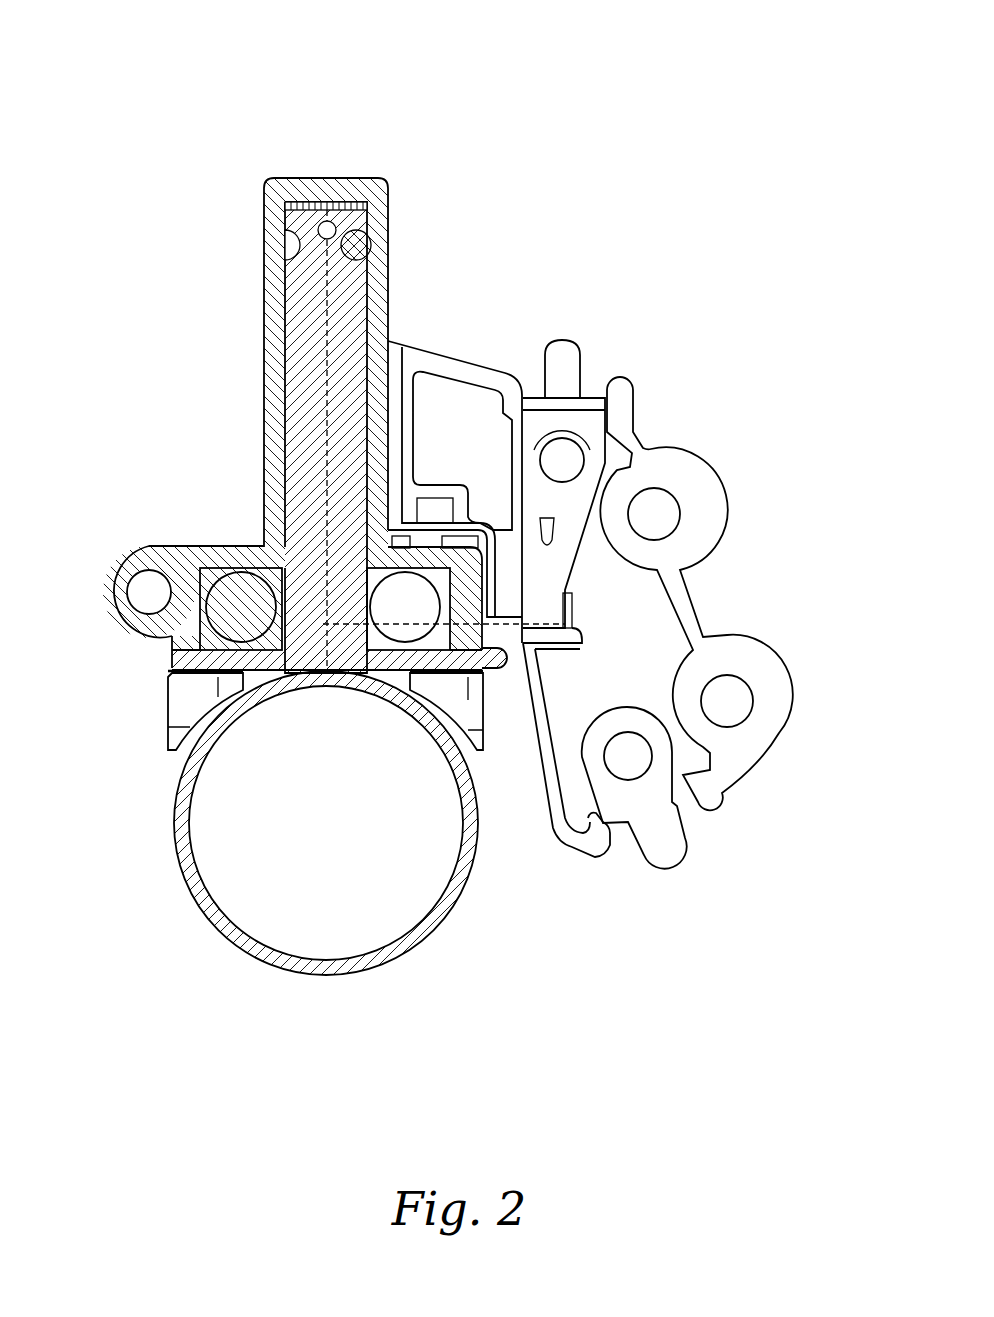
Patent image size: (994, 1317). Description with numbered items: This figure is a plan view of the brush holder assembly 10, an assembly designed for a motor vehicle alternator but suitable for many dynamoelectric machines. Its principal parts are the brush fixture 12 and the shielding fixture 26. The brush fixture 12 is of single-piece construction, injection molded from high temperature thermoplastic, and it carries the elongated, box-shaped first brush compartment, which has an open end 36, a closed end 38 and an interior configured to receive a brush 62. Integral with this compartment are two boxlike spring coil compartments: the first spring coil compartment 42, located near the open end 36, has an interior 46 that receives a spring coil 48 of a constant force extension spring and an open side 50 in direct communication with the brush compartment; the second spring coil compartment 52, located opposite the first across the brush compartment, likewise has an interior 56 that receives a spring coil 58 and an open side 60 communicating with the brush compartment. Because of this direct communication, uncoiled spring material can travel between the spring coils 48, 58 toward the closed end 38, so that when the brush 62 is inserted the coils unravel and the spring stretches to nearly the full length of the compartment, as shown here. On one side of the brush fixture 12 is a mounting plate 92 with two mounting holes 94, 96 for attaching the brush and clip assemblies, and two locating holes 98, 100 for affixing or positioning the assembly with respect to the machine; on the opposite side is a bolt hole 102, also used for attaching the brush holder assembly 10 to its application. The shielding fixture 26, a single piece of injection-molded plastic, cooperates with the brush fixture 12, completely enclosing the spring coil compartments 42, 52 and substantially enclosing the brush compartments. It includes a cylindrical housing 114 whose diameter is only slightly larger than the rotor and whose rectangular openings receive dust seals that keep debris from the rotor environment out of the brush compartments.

The brush holder assembly 10 is at (148, 73).
The brush fixture 12 is at (569, 227).
The shielding fixture 26 is at (149, 789).
The open end 36 is at (277, 680).
The closed end 38 is at (328, 178).
The first spring coil compartment 42 is at (280, 572).
The interior 46 is at (172, 637).
The spring coil 48 is at (176, 697).
The open side 50 is at (233, 600).
The second spring coil compartment 52 is at (440, 645).
The interior 56 is at (410, 617).
The spring coil 58 is at (363, 640).
The open side 60 is at (370, 568).
The brush 62 is at (297, 292).
The mounting plate 92 is at (693, 612).
The mounting hole 94 is at (578, 458).
The mounting hole 96 is at (628, 773).
The locating hole 98 is at (660, 512).
The locating hole 100 is at (740, 697).
The bolt hole 102 is at (108, 585).
The cylindrical housing 114 is at (467, 898).